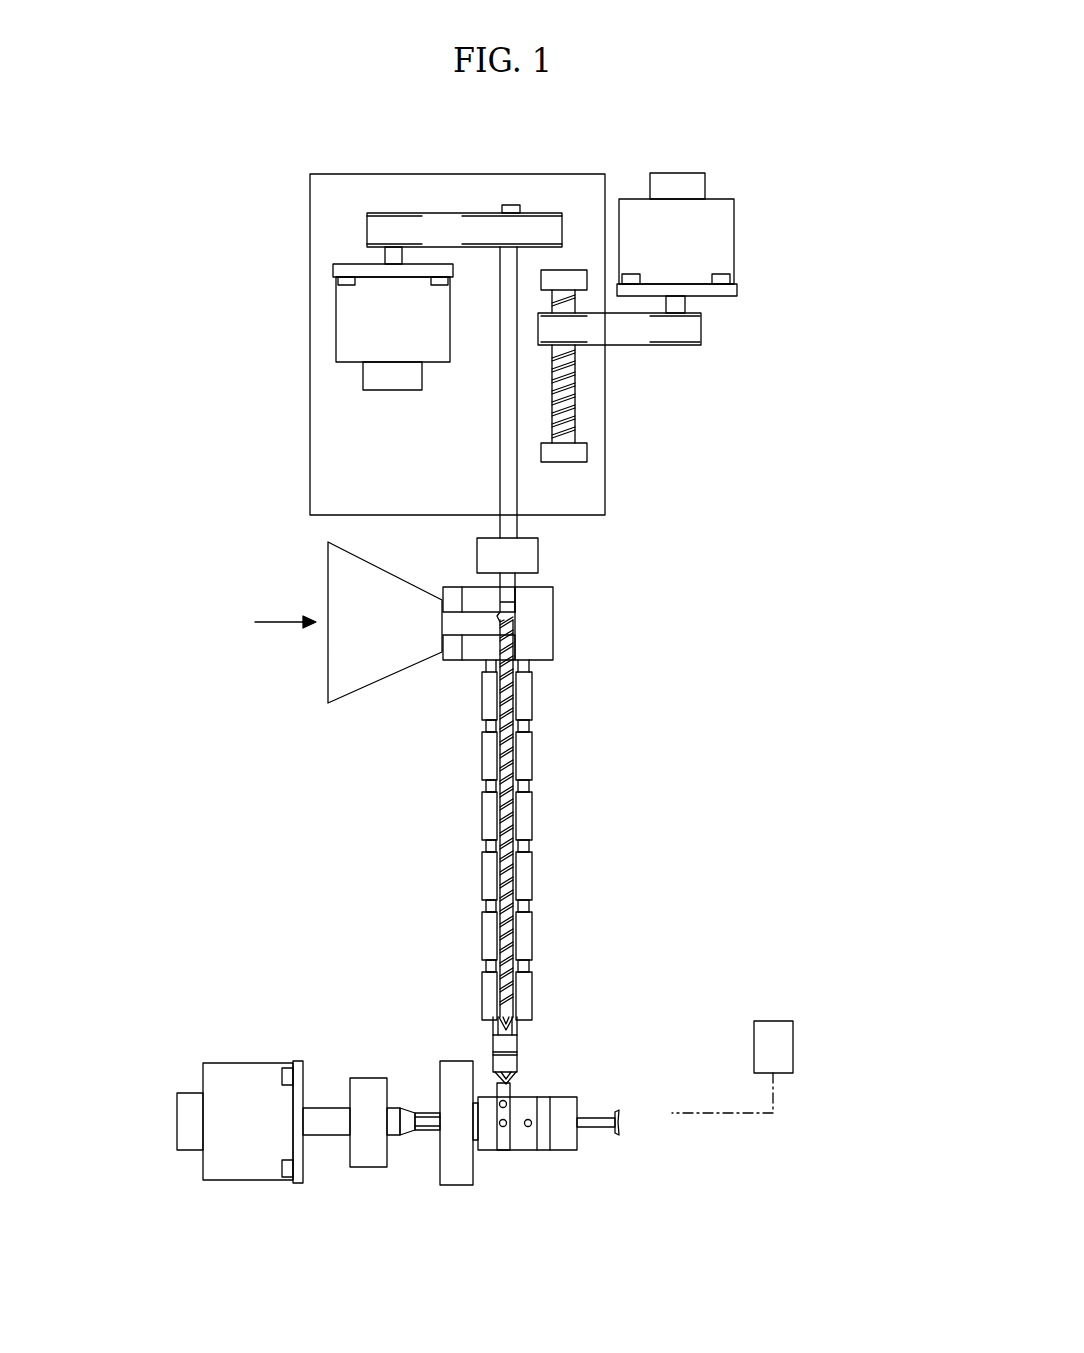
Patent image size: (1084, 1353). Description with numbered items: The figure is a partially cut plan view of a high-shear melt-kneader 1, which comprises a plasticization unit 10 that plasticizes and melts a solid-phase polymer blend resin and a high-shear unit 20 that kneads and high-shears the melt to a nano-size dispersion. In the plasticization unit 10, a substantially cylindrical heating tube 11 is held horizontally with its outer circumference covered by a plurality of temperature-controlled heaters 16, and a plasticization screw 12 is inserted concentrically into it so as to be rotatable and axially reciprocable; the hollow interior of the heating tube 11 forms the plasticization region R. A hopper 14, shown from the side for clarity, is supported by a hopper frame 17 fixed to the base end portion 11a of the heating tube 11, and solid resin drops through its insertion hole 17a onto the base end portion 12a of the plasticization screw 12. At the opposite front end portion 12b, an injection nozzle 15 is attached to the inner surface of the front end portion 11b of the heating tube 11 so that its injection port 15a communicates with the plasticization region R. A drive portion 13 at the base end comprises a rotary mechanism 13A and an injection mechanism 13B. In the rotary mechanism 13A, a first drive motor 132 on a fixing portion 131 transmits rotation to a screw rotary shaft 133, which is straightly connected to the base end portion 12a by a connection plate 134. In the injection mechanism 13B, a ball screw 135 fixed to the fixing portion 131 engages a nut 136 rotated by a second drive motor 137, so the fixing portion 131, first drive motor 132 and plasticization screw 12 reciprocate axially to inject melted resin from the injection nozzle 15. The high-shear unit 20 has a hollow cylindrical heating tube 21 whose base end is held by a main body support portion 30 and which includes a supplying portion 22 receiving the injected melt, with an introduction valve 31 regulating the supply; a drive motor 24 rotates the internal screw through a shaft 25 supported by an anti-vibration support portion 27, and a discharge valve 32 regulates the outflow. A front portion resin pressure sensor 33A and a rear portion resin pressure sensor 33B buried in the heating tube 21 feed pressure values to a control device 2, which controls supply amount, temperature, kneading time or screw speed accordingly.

The high-shear melt-kneader 1 is at (773, 186).
The control device 2 is at (797, 1038).
The plasticization unit 10 is at (297, 566).
The heating tube 11 is at (528, 787).
The base end portion 11a is at (525, 660).
The front end portion 11b is at (517, 1027).
The plasticization screw 12 is at (528, 725).
The base end portion 12a is at (527, 612).
The front end portion 12b is at (532, 998).
The drive portion 13 is at (616, 437).
The rotary mechanism 13A is at (484, 200).
The injection mechanism 13B is at (726, 318).
The hopper 14 is at (328, 665).
The injection nozzle 15 is at (517, 1050).
The injection port 15a is at (511, 1084).
The heaters 16 is at (482, 810).
The hopper frame 17 is at (553, 628).
The insertion hole 17a is at (457, 628).
The high-shear unit 20 is at (270, 1022).
The heating tube 21 is at (520, 1150).
The supplying portion 22 is at (512, 1090).
The drive motor 24 is at (230, 1063).
The shaft 25 is at (328, 1145).
The anti-vibration support portion 27 is at (372, 1078).
The main body support portion 30 is at (455, 1067).
The introduction valve 31 is at (500, 1095).
The discharge valve 32 is at (608, 1133).
The front portion resin pressure sensor 33A is at (530, 1130).
The rear portion resin pressure sensor 33B is at (500, 1130).
The fixing portion 131 is at (430, 174).
The first drive motor 132 is at (336, 310).
The screw rotary shaft 133 is at (500, 447).
The connection plate 134 is at (538, 553).
The ball screw 135 is at (578, 390).
The nut 136 is at (590, 349).
The second drive motor 137 is at (734, 232).
The plasticization region R is at (556, 817).